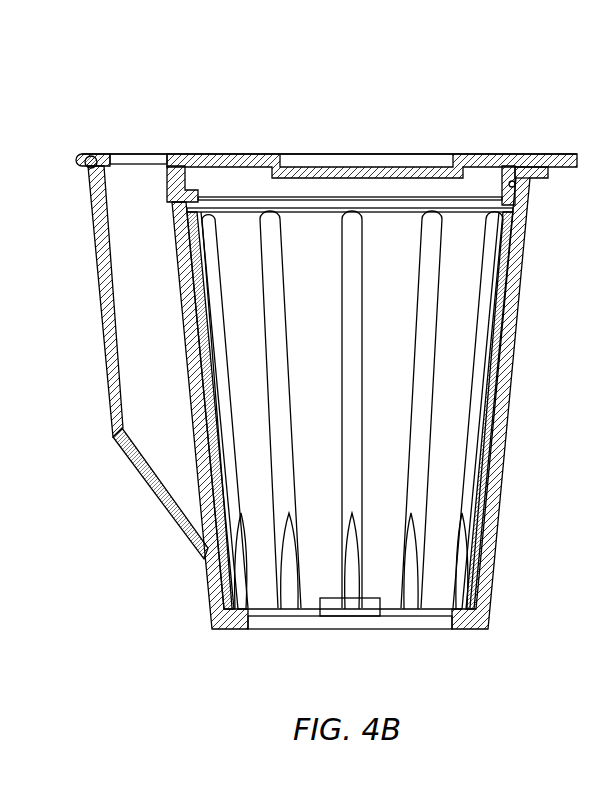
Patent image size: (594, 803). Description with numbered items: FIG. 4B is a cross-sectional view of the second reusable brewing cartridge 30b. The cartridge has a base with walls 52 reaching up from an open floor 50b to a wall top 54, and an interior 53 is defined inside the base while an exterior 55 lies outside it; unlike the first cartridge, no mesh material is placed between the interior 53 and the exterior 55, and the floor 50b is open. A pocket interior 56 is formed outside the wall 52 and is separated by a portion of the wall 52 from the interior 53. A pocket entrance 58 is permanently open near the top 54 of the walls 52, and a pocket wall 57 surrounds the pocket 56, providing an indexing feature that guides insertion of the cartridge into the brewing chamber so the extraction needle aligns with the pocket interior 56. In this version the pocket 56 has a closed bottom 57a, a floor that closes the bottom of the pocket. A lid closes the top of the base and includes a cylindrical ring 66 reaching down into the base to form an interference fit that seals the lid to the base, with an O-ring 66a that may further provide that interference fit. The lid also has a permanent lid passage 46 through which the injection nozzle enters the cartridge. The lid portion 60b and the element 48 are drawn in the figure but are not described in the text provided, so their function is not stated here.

The second reusable brewing cartridge 30b is at (292, 84).
The permanent lid passage 46 is at (375, 192).
The hinge pin 48 is at (90, 153).
The open floor 50b is at (262, 626).
The walls 52 is at (517, 310).
The interior 53 is at (254, 257).
The wall top 54 is at (528, 190).
The exterior 55 is at (552, 484).
The pocket interior 56 is at (160, 314).
The pocket wall 57 is at (106, 346).
The closed bottom 57a is at (160, 487).
The pocket entrance 58 is at (135, 154).
The lid rim 60b is at (477, 160).
The cylindrical ring 66 is at (225, 154).
The O-ring 66a is at (192, 154).